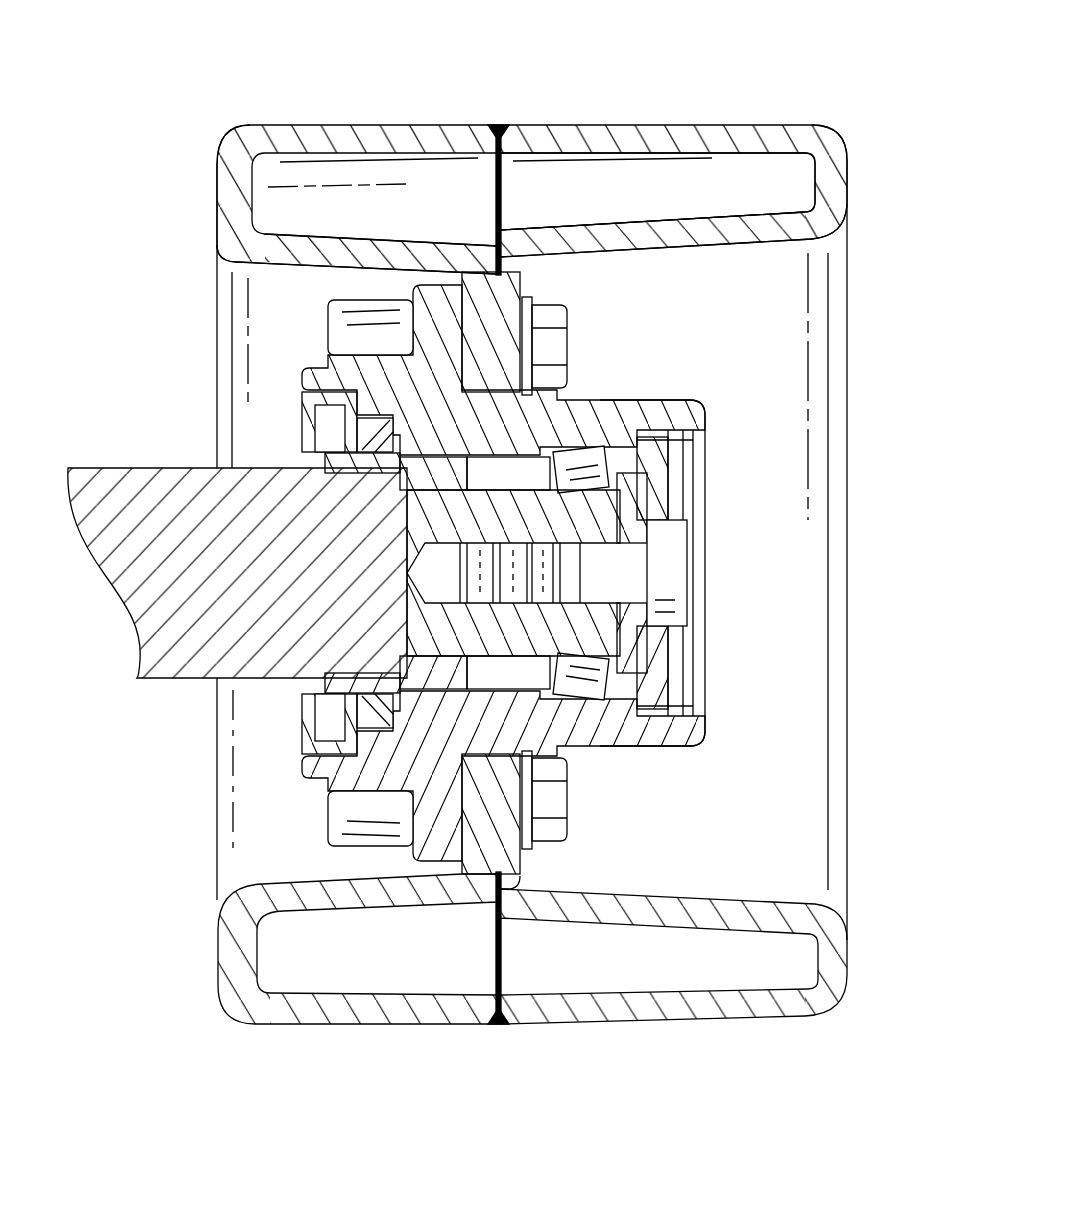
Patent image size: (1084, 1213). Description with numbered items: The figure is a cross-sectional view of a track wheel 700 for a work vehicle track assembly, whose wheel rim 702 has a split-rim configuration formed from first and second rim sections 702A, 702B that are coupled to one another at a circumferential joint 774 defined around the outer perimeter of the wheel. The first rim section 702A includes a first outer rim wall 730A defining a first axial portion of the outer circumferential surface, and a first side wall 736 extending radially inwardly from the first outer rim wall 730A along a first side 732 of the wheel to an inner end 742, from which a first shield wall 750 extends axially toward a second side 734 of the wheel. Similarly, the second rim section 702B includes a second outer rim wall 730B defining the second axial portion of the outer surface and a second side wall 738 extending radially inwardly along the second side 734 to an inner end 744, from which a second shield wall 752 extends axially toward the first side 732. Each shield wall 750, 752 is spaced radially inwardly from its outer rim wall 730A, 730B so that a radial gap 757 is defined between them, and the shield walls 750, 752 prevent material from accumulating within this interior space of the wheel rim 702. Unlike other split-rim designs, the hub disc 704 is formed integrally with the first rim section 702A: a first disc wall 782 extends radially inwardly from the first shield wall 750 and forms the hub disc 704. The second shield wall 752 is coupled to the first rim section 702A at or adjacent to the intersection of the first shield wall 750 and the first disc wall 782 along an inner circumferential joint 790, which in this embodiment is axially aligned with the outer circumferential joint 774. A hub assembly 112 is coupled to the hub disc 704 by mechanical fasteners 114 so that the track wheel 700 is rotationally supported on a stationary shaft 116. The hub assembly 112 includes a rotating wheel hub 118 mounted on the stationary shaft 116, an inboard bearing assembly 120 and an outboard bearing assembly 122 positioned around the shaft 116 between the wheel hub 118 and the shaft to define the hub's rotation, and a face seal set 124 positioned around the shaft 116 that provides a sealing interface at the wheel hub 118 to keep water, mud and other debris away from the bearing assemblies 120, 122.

The track wheel 700 is at (212, 73).
The wheel rim 702 is at (641, 95).
The first rim section 702A is at (388, 1025).
The second rim section 702B is at (711, 1022).
The first outer rim wall 730A is at (391, 130).
The second outer rim wall 730B is at (721, 136).
The circumferential joint 774 is at (495, 125).
The first side wall 736 is at (236, 186).
The second side wall 738 is at (833, 189).
The first side 732 is at (156, 283).
The second side 734 is at (861, 413).
The inner end 742 is at (217, 254).
The inner end 744 is at (839, 236).
The first shield wall 750 is at (302, 256).
The second shield wall 752 is at (681, 240).
The radial gap 757 is at (572, 207).
The first disc wall 782 is at (486, 300).
The inner circumferential joint 790 is at (541, 268).
The mechanical fasteners 114 is at (568, 338).
The outboard bearing assembly 122 is at (597, 453).
The hub assembly 112 is at (711, 557).
The wheel hub 118 is at (673, 722).
The stationary shaft 116 is at (149, 467).
The face seal set 124 is at (291, 431).
The inboard bearing assembly 120 is at (447, 677).
The hub disc 704 is at (531, 870).